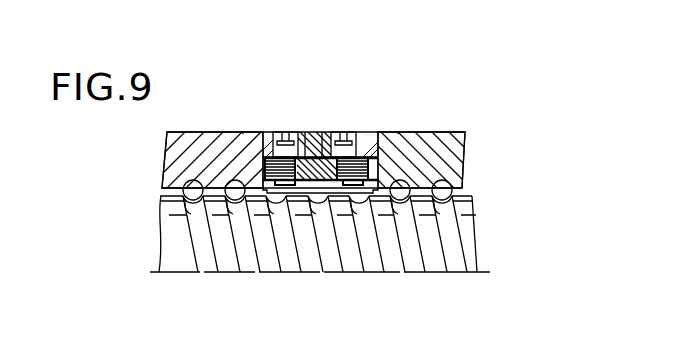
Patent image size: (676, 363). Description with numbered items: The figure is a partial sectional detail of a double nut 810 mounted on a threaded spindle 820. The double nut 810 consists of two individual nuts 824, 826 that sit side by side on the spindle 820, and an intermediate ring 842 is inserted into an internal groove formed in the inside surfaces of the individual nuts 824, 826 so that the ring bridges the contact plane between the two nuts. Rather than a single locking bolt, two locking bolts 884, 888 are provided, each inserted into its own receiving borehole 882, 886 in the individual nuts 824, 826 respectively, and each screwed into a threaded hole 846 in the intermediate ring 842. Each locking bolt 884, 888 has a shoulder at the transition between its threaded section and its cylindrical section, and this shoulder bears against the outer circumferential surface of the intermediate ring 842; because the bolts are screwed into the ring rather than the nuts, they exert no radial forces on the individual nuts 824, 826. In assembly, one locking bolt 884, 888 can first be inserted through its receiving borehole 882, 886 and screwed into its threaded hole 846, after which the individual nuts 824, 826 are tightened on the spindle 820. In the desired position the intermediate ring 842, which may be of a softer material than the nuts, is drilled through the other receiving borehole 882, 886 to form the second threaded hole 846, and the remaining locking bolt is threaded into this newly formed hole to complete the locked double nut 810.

The double nut 810 is at (466, 114).
The threaded spindle 820 is at (450, 240).
The individual nut 824 is at (166, 148).
The individual nut 826 is at (452, 158).
The intermediate ring 842 is at (328, 133).
The threaded hole 846 is at (243, 133).
The receiving borehole 882 is at (277, 133).
The locking bolt 884 is at (297, 133).
The receiving borehole 886 is at (373, 133).
The locking bolt 888 is at (357, 133).